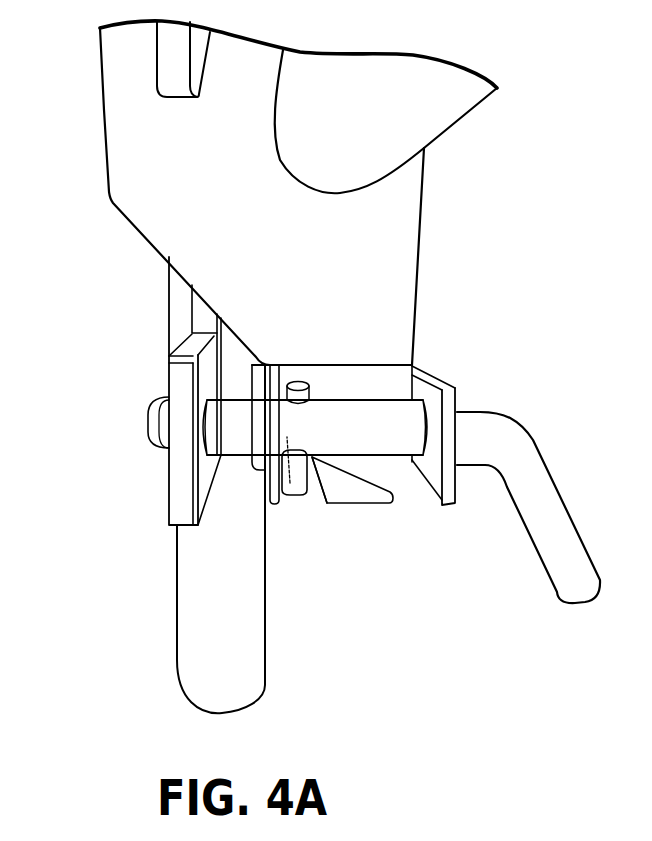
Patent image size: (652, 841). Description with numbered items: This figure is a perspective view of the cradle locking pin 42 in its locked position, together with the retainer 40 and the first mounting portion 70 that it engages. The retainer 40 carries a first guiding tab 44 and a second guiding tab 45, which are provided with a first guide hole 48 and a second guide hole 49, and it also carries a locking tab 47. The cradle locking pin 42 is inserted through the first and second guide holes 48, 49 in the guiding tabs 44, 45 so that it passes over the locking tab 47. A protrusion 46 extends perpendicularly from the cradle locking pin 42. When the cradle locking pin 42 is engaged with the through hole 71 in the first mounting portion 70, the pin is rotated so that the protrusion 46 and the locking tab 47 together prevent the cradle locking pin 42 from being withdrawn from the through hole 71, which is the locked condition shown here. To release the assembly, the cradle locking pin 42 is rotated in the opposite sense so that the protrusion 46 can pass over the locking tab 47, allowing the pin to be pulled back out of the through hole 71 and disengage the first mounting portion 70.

The retainer 40 is at (198, 217).
The cradle locking pin 42 is at (495, 458).
The first guiding tab 44 is at (277, 365).
The second guiding tab 45 is at (442, 390).
The protrusion 46 is at (300, 483).
The locking tab 47 is at (372, 497).
The first guide hole 48 is at (290, 483).
The second guide hole 49 is at (423, 400).
The first mounting portion 70 is at (182, 467).
The through hole 71 is at (219, 456).